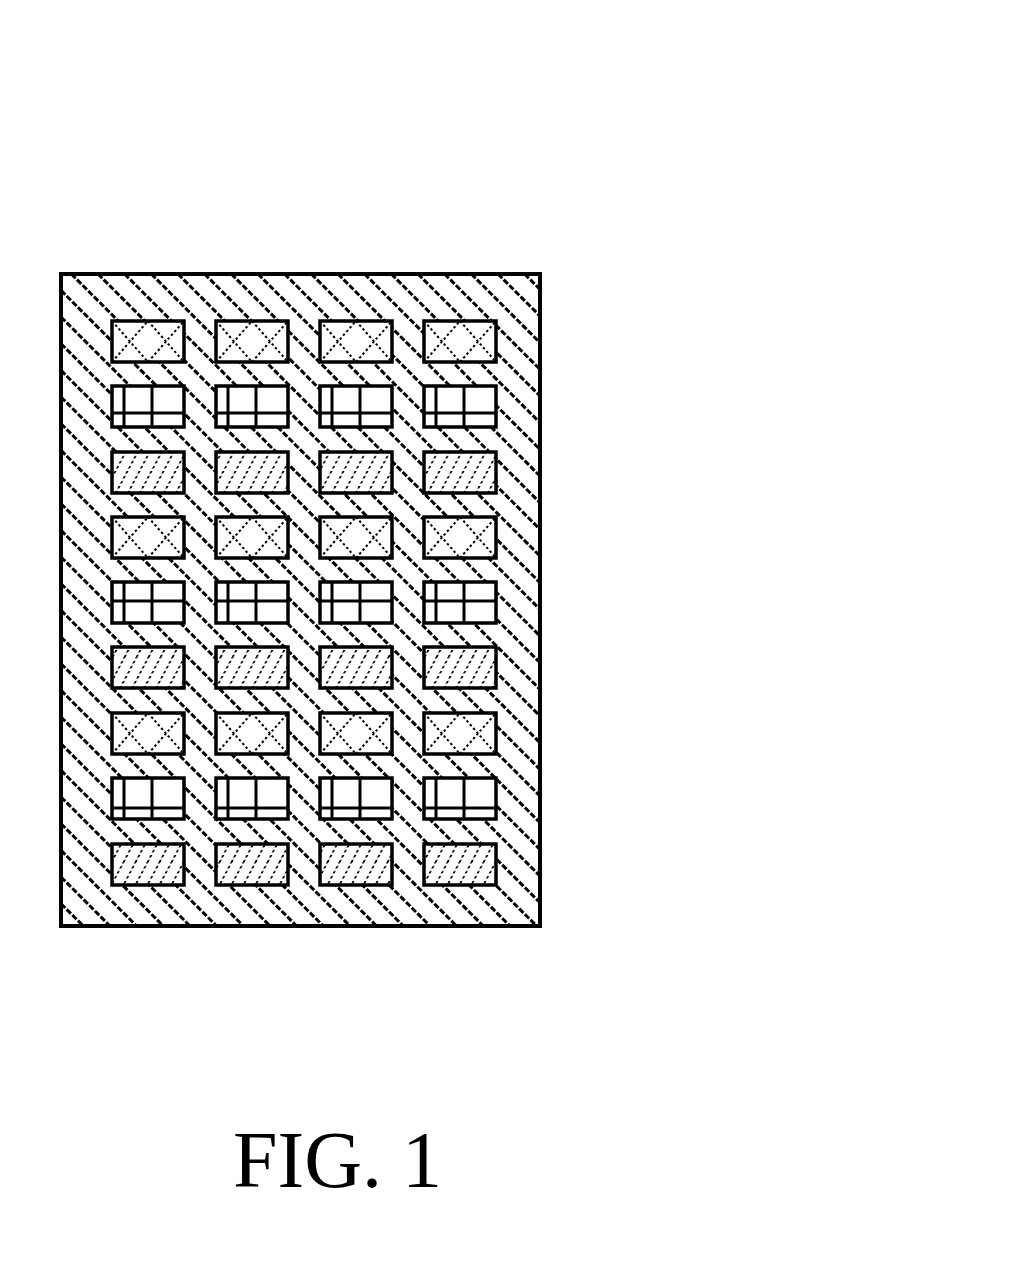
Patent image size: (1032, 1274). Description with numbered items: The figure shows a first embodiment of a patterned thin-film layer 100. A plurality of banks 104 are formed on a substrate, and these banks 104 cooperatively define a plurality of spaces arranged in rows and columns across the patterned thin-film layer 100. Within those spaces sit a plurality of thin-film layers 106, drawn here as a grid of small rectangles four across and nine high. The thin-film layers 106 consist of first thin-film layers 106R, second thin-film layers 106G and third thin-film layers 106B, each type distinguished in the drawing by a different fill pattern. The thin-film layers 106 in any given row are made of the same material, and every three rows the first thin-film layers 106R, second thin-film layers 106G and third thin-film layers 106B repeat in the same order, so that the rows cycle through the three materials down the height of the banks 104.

The patterned thin-film layer 100 is at (395, 60).
The banks 104 is at (508, 425).
The thin-film layers 106 is at (508, 520).
The first thin-film layers 106R is at (475, 347).
The second thin-film layers 106G is at (485, 805).
The third thin-film layers 106B is at (485, 868).